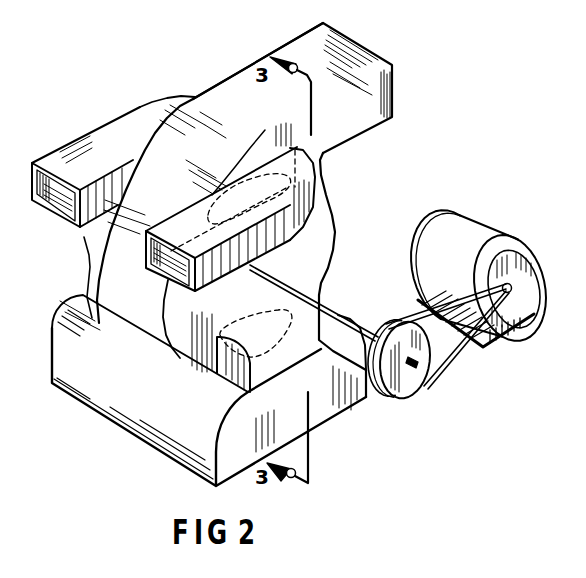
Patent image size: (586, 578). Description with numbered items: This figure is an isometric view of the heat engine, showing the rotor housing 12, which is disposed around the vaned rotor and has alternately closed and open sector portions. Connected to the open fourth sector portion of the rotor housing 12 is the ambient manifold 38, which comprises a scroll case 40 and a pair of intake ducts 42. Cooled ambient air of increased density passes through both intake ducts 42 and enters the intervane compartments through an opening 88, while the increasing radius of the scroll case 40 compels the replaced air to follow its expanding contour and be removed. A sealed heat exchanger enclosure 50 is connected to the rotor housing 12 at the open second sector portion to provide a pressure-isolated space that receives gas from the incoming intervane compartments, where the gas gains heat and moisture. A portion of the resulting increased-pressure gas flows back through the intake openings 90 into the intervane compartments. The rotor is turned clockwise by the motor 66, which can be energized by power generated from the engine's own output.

The rotor housing 12 is at (335, 204).
The scroll case 40 is at (238, 82).
The intake ducts 42 is at (190, 223).
The ambient manifold 38 is at (282, 153).
The opening 88 is at (224, 211).
The intake openings 90 is at (273, 352).
The sealed heat exchanger enclosure 50 is at (120, 417).
The motor 66 is at (488, 222).